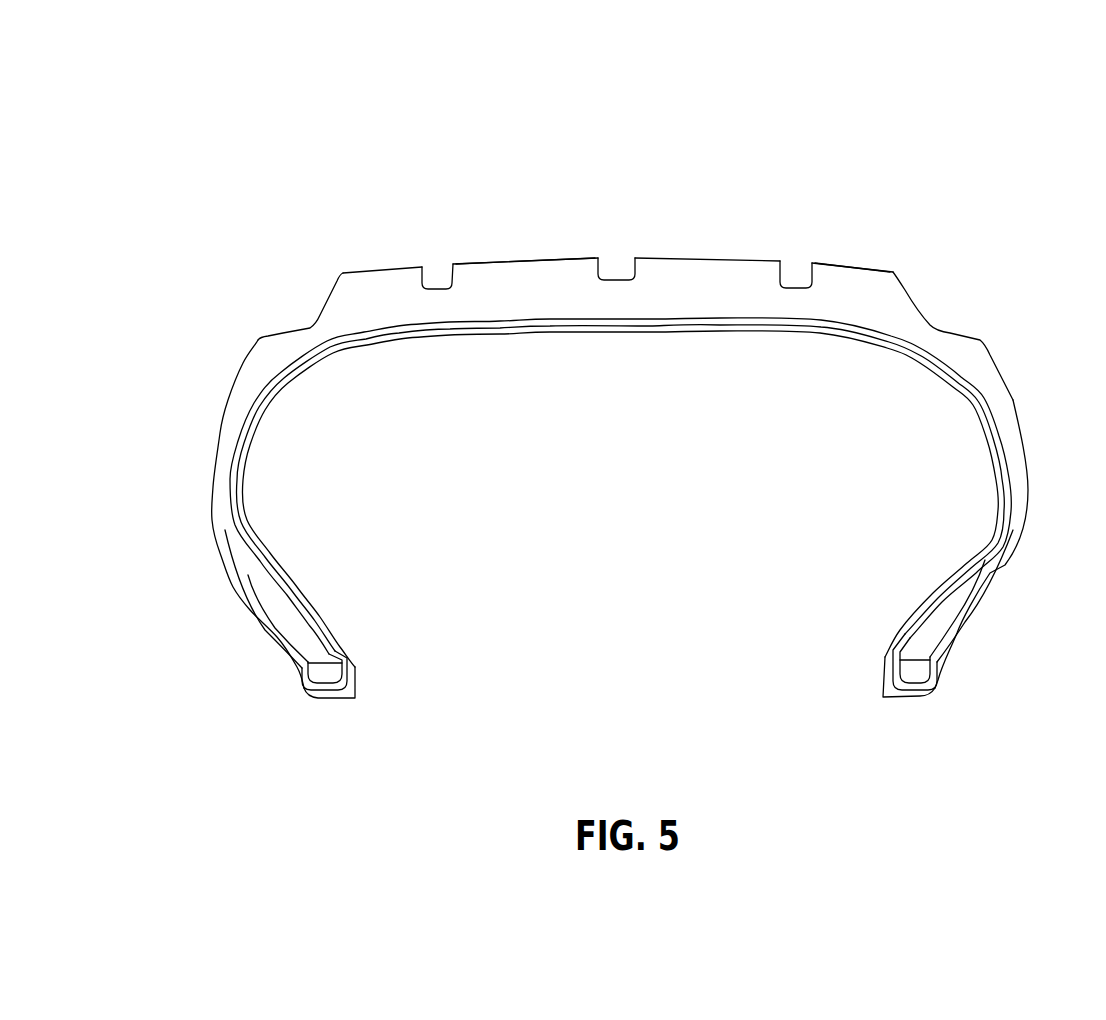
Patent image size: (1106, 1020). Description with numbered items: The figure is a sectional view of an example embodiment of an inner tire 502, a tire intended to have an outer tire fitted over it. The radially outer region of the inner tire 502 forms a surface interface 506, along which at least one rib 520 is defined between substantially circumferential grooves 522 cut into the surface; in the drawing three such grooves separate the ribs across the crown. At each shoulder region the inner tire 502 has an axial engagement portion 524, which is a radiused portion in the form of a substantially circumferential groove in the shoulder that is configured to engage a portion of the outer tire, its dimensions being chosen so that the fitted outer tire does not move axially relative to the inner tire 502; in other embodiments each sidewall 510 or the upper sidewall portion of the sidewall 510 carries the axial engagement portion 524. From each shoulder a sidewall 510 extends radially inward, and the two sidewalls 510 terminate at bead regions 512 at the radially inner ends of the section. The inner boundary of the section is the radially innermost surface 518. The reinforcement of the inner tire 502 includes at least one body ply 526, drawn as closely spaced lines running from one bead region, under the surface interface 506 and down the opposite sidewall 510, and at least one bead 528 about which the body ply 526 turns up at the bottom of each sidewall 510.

The inner tire 502 is at (866, 123).
The surface interface 506 is at (543, 258).
The sidewall 510 is at (228, 400).
The bead 512 is at (300, 688).
The radially innermost surface 518 is at (541, 333).
The rib 520 is at (477, 272).
The substantially circumferential groove 522 is at (440, 274).
The axial engagement portion 524 is at (307, 325).
The body ply 526 is at (400, 340).
The bead 528 is at (334, 673).